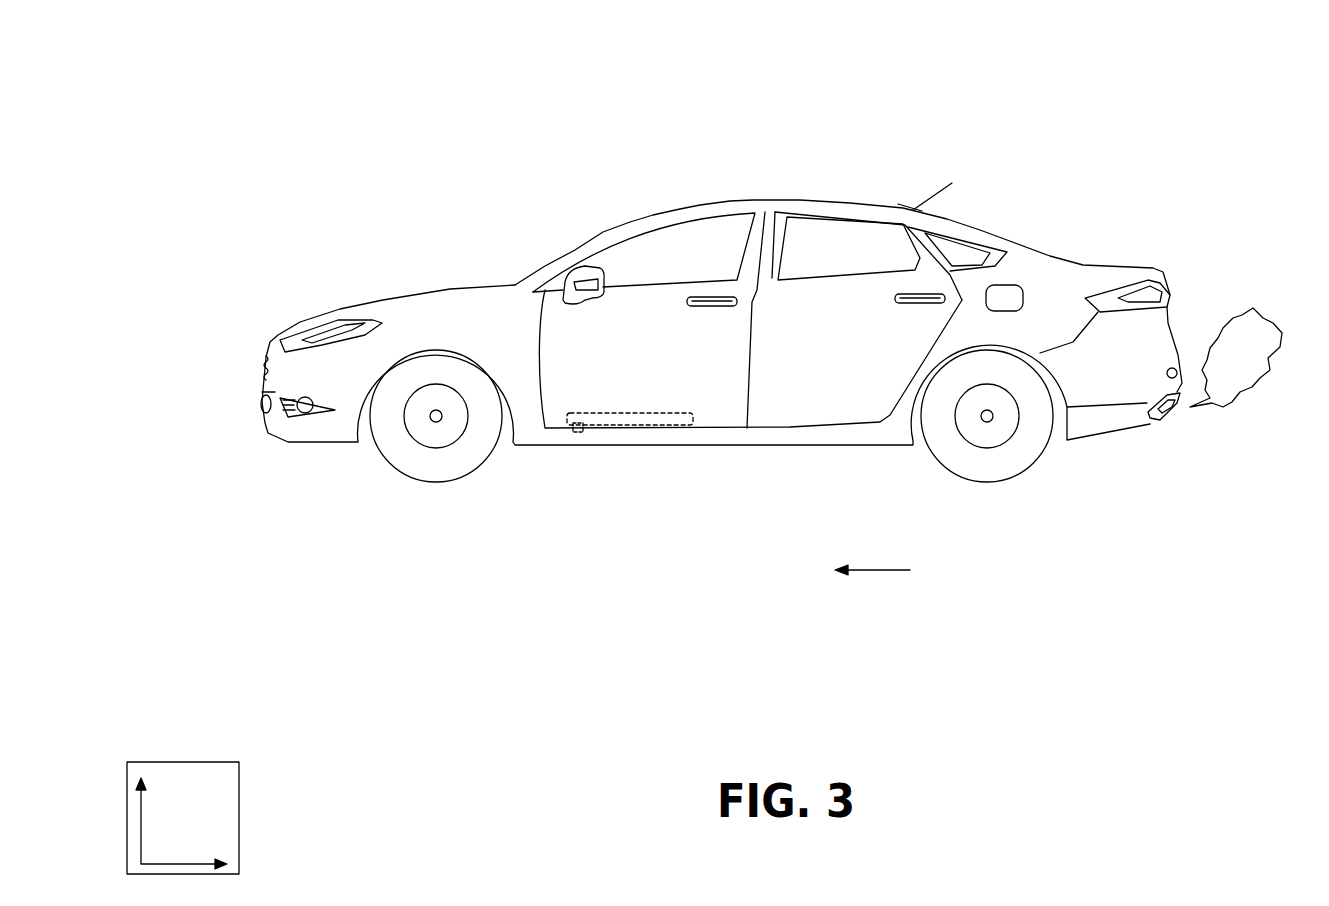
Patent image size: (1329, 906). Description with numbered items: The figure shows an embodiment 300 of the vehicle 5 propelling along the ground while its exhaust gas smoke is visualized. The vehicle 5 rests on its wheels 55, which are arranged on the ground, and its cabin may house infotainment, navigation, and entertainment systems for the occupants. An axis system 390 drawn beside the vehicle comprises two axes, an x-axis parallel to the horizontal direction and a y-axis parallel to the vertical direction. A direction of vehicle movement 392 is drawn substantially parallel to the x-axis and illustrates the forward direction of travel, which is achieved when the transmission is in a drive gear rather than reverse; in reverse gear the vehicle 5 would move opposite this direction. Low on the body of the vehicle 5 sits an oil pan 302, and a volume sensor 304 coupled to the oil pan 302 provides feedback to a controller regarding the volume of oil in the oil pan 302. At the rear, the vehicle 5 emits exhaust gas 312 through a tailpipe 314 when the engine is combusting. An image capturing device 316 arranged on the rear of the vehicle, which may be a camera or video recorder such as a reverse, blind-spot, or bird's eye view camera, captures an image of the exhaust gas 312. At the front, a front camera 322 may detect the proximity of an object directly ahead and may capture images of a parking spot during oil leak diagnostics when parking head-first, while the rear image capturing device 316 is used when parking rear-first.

The embodiment 300 is at (1224, 31).
The vehicle 5 is at (1200, 550).
The wheels 55 is at (455, 478).
The oil pan 302 is at (658, 413).
The volume sensor 304 is at (576, 433).
The exhaust gas 312 is at (1255, 308).
The tailpipe 314 is at (1178, 420).
The image capturing device 316 is at (1168, 374).
The front camera 322 is at (286, 378).
The axis system 390 is at (222, 760).
The direction of vehicle movement 392 is at (882, 570).